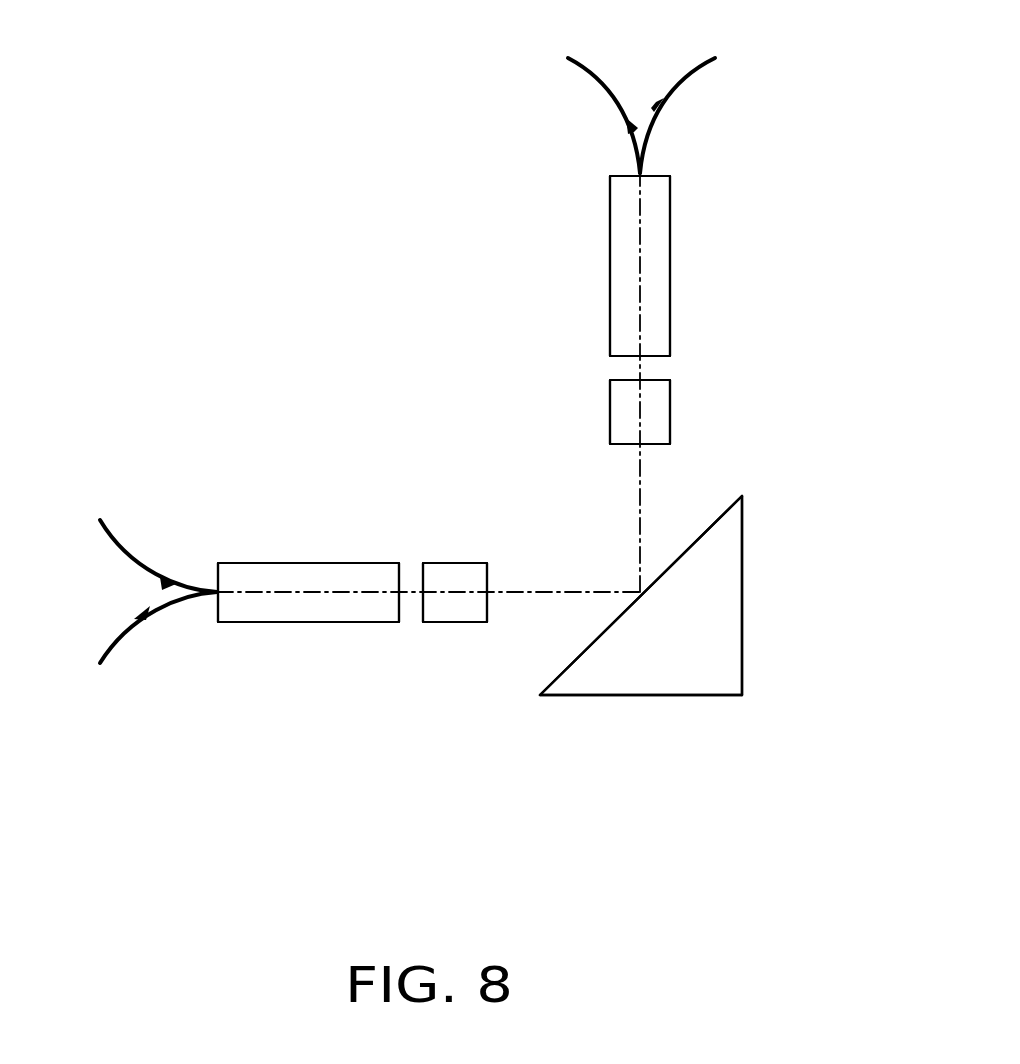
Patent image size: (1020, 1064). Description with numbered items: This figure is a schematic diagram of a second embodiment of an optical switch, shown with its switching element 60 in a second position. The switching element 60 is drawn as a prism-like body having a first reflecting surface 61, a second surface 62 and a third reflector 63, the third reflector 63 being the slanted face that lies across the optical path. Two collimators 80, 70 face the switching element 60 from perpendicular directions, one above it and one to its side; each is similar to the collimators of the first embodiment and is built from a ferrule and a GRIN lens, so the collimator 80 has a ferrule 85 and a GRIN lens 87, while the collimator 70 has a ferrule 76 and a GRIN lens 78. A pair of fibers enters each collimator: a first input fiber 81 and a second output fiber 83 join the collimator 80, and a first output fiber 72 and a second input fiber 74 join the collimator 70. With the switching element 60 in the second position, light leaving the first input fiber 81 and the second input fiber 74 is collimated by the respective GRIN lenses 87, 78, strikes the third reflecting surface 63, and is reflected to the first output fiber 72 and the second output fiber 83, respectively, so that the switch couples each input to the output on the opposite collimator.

The switching element 60 is at (703, 680).
The first reflecting surface 61 is at (642, 695).
The second surface 62 is at (742, 607).
The third reflector 63 is at (680, 557).
The collimator 70 is at (402, 692).
The first output fiber 72 is at (113, 538).
The second input fiber 74 is at (117, 630).
The ferrule 76 is at (307, 623).
The GRIN lens 78 is at (455, 623).
The collimator 80 is at (833, 220).
The first input fiber 81 is at (692, 72).
The second output fiber 83 is at (592, 72).
The ferrule 85 is at (672, 272).
The GRIN lens 87 is at (672, 395).